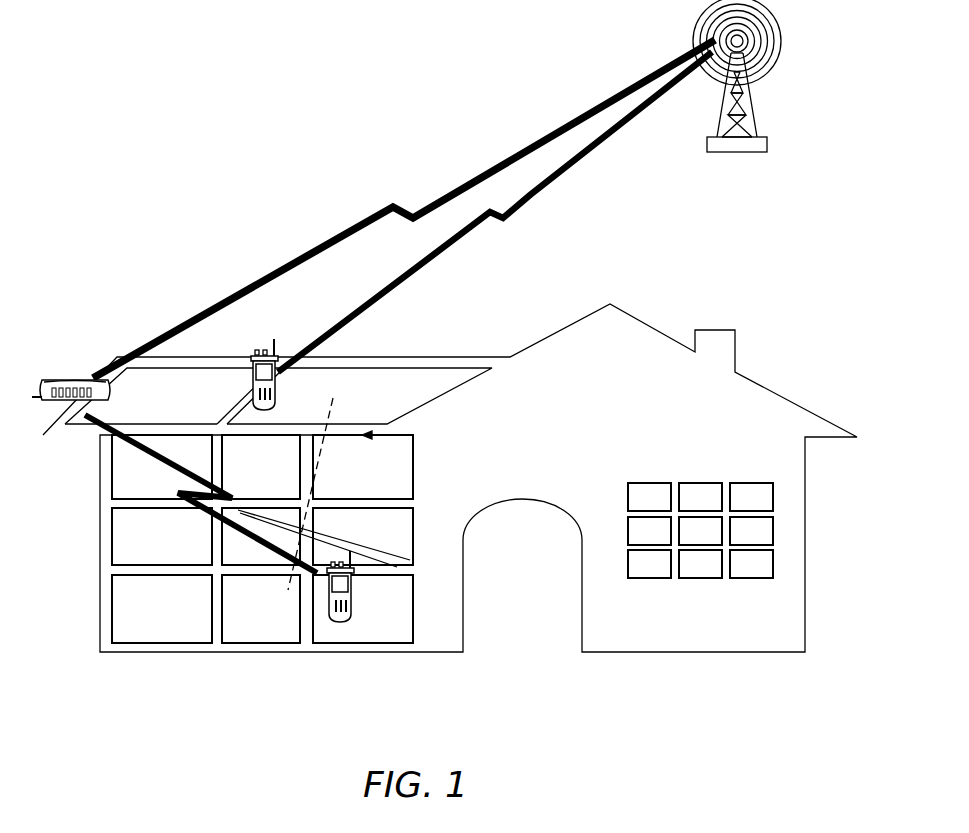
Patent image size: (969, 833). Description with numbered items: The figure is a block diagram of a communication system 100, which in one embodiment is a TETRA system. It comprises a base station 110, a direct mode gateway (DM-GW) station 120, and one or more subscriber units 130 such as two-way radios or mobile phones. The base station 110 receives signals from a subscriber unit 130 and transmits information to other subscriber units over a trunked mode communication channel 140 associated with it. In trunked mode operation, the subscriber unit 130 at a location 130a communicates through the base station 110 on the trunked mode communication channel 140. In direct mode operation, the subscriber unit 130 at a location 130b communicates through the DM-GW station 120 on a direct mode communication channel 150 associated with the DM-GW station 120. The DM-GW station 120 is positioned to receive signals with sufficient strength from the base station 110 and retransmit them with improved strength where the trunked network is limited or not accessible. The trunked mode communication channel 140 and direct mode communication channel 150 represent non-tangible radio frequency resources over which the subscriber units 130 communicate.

The communication system 100 is at (450, 344).
The base station 110 is at (755, 106).
The direct mode gateway (DM-GW) station 120 is at (67, 362).
The subscriber unit 130 is at (333, 489).
The location of subscriber unit in trunked mode 130a is at (337, 374).
The location of subscriber unit in direct mode 130b is at (298, 595).
The trunked mode communication channel 140 is at (404, 209).
The direct mode communication channel 150 is at (190, 512).